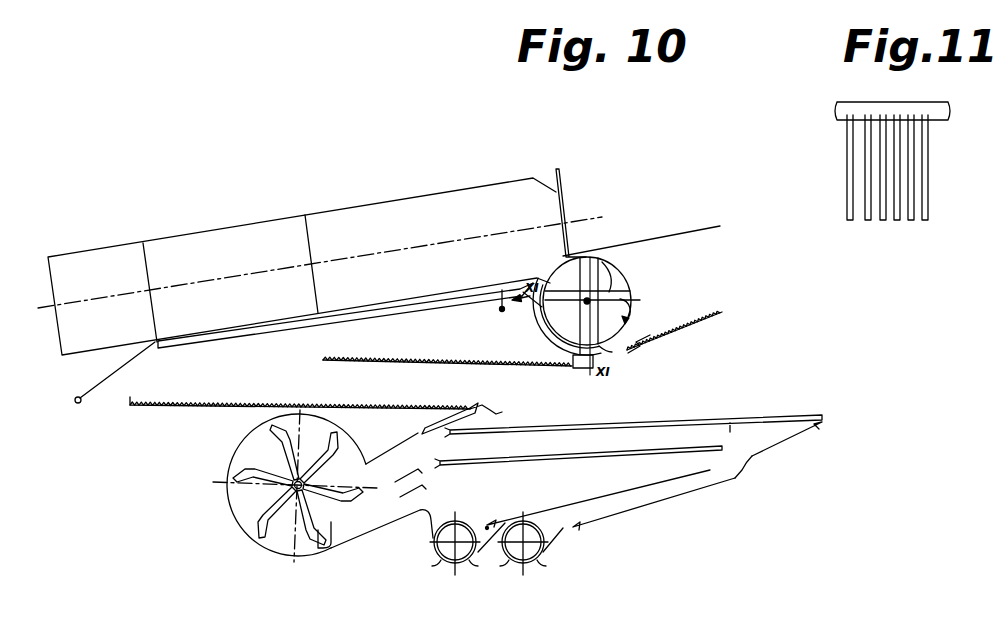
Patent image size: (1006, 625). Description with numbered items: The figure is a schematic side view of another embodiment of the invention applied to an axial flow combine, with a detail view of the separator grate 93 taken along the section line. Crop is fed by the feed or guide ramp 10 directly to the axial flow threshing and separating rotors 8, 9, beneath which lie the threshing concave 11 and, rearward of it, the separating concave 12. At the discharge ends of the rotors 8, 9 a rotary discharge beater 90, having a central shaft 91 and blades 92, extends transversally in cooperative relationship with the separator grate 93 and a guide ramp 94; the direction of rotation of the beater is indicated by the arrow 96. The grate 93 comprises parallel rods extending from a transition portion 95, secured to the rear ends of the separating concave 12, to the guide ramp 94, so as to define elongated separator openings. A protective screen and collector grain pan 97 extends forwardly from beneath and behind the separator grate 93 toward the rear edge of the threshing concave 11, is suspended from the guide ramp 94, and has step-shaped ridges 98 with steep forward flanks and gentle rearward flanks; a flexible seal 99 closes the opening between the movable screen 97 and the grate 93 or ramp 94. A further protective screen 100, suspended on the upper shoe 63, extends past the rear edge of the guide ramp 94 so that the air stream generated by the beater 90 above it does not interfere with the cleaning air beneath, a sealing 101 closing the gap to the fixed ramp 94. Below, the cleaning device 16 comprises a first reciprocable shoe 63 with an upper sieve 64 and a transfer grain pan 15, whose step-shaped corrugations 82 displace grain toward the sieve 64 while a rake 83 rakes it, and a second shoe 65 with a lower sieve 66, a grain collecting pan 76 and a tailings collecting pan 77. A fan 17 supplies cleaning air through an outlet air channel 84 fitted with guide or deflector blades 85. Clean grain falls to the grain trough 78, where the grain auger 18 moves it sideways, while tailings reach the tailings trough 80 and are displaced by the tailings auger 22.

In FIG. 10, the rotor 8 is at (413, 189).
In FIG. 10, the rotor 9 is at (320, 278).
In FIG. 10, the feed or guide ramp 10 is at (108, 372).
In FIG. 10, the threshing concave 11 is at (292, 332).
In FIG. 10, the separating concave 12 is at (425, 306).
In FIG. 10, the transfer grain pan 15 is at (427, 379).
In FIG. 10, the cleaning device 16 is at (784, 482).
In FIG. 10, the fan 17 is at (326, 548).
In FIG. 10, the grain auger 18 is at (468, 523).
In FIG. 10, the tailings auger 22 is at (545, 540).
In FIG. 10, the first reciprocable shoe 63 is at (788, 440).
In FIG. 10, the upper sieve 64 is at (677, 424).
In FIG. 10, the second shoe 65 is at (645, 503).
In FIG. 10, the lower sieve 66 is at (534, 464).
In FIG. 10, the grain collecting pan 76 is at (600, 497).
In FIG. 10, the tailings collecting pan 77 is at (710, 484).
In FIG. 10, the grain gully or trough 78 is at (446, 566).
In FIG. 10, the tailings gully or trough 80 is at (530, 567).
In FIG. 10, the step-shaped corrugations 82 is at (295, 403).
In FIG. 10, the rake 83 is at (498, 412).
In FIG. 10, the outlet air channel 84 is at (372, 530).
In FIG. 10, the guide or deflector blades 85 is at (420, 480).
In FIG. 10, the rotary discharge beater 90 is at (681, 267).
In FIG. 10, the central shaft 91 is at (586, 304).
In FIG. 10, the blades 92 is at (600, 258).
In FIG. 10, the separator grate 93 is at (532, 312).
In FIG. 11, the separator grate 93 is at (930, 200).
In FIG. 10, the guide ramp 94 is at (612, 352).
In FIG. 10, the transition portion 95 is at (500, 312).
In FIG. 10, the rotation arrow 96 is at (646, 312).
In FIG. 10, the protective screen and collector grain pan 97 is at (365, 372).
In FIG. 10, the step-shaped ridges 98 is at (360, 358).
In FIG. 10, the flexible seal 99 is at (580, 370).
In FIG. 10, the protective screen 100 is at (681, 341).
In FIG. 10, the sealing 101 is at (660, 330).